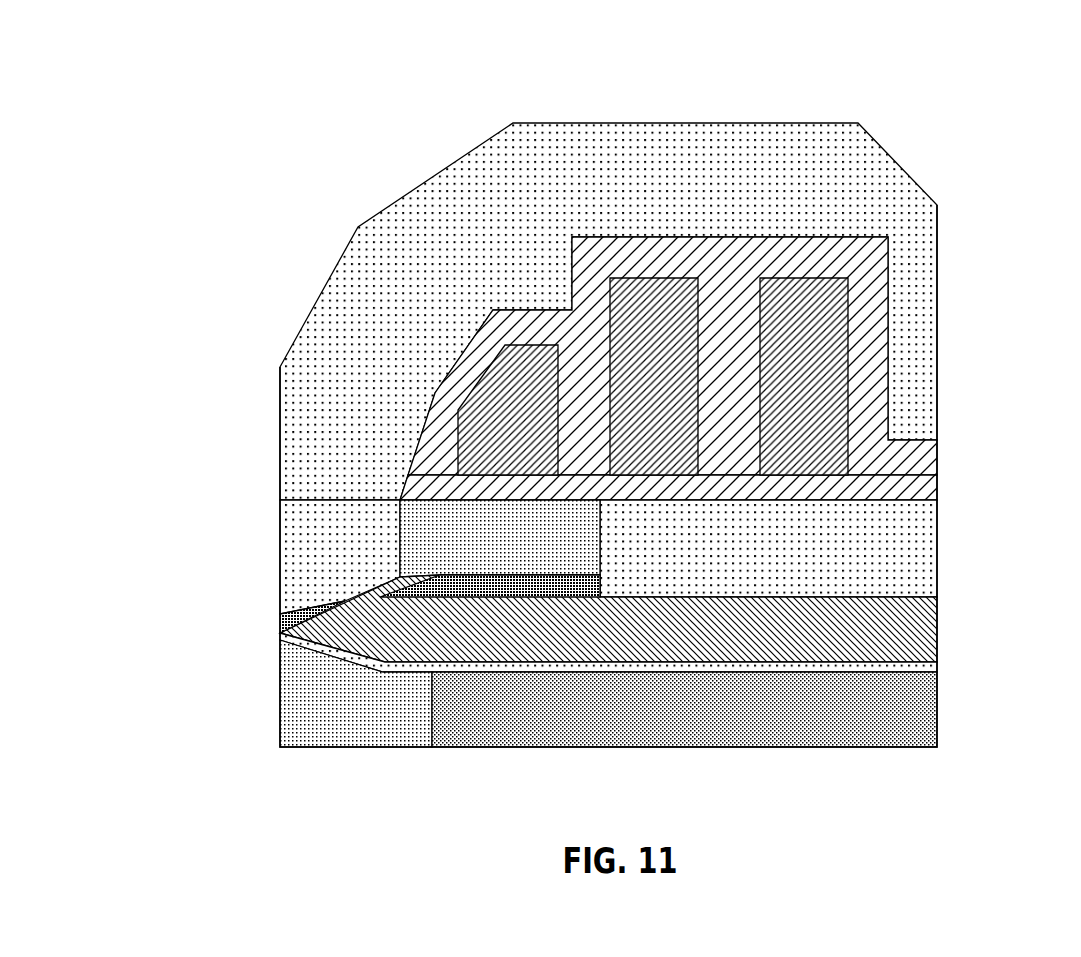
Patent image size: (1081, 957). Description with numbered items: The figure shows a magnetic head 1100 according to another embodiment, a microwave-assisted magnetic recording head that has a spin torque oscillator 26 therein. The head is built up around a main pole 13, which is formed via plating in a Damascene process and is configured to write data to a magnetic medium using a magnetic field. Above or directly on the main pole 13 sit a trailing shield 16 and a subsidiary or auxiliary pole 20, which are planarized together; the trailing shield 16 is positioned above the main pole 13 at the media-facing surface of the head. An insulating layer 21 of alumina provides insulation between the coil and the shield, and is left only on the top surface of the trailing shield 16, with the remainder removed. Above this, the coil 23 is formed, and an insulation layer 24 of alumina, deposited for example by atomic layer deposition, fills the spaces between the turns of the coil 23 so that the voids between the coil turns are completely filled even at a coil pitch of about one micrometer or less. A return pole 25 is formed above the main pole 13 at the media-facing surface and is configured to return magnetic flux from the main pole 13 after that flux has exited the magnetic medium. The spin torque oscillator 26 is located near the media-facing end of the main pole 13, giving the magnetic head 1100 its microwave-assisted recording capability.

The magnetic head 1100 is at (413, 90).
The return pole 25 is at (643, 183).
The insulation layer 24 is at (912, 462).
The coil 23 is at (503, 433).
The insulating layer 21 is at (923, 487).
The auxiliary pole 20 is at (758, 556).
The trailing shield 16 is at (328, 556).
The main pole 13 is at (613, 636).
The spin torque oscillator 26 is at (280, 623).